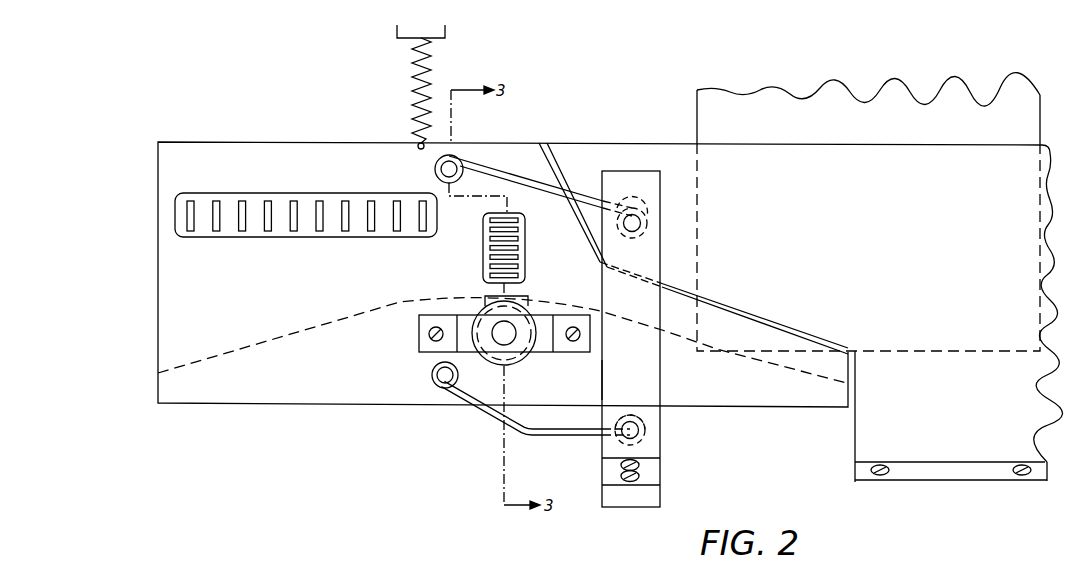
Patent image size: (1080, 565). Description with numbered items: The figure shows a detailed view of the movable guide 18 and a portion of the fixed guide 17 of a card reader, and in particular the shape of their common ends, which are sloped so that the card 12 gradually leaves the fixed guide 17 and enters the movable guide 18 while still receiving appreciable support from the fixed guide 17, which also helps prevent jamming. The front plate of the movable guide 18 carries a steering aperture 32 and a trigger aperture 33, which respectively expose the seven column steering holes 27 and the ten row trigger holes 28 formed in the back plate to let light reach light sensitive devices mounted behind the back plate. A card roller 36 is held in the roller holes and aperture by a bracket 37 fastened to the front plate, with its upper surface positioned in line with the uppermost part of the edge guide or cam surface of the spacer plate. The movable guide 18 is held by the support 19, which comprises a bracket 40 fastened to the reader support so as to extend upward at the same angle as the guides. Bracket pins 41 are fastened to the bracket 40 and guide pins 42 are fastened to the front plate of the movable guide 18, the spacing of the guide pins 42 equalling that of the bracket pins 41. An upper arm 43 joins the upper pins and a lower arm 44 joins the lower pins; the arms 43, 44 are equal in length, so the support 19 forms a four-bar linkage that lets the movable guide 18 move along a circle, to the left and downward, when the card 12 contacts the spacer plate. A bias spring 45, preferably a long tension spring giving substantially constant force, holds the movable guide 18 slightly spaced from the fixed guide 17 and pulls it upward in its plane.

The card 12 is at (829, 90).
The fixed guide 17 is at (630, 140).
The movable guide 18 is at (148, 190).
The support 19 is at (667, 423).
The column steering holes 27 is at (526, 222).
The row trigger holes 28 is at (195, 203).
The steering aperture 32 is at (526, 242).
The trigger aperture 33 is at (284, 198).
The card roller 36 is at (517, 358).
The bracket 37 is at (549, 346).
The bracket 40 is at (661, 370).
The bracket pins 41 is at (642, 222).
The guide pins 42 is at (437, 169).
The upper arm 43 is at (587, 183).
The lower arm 44 is at (472, 410).
The bias spring 45 is at (410, 95).